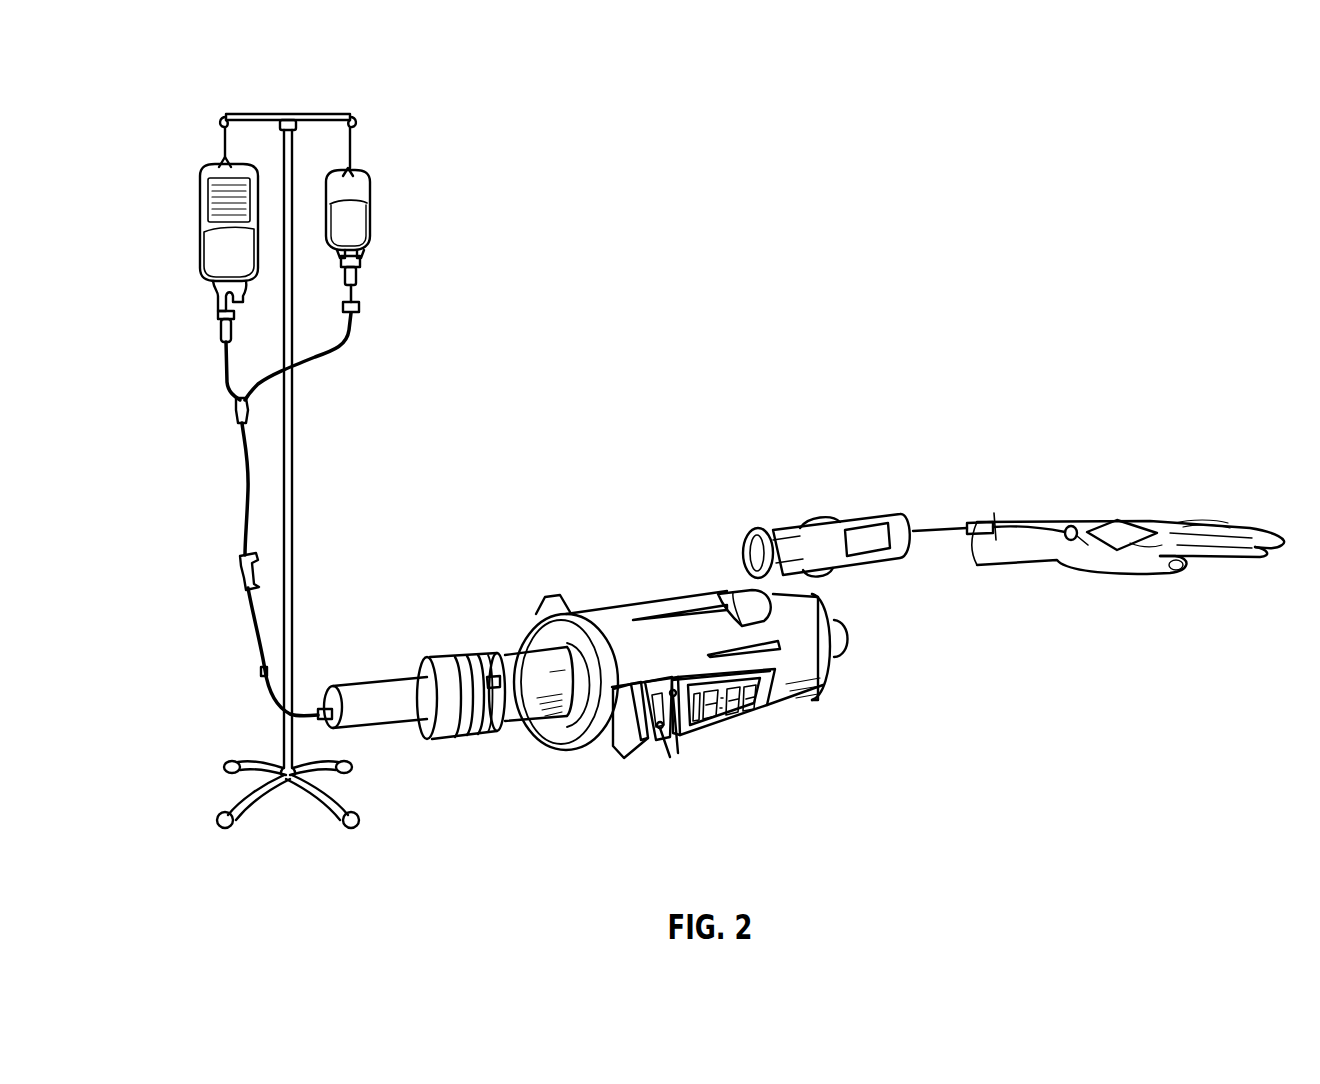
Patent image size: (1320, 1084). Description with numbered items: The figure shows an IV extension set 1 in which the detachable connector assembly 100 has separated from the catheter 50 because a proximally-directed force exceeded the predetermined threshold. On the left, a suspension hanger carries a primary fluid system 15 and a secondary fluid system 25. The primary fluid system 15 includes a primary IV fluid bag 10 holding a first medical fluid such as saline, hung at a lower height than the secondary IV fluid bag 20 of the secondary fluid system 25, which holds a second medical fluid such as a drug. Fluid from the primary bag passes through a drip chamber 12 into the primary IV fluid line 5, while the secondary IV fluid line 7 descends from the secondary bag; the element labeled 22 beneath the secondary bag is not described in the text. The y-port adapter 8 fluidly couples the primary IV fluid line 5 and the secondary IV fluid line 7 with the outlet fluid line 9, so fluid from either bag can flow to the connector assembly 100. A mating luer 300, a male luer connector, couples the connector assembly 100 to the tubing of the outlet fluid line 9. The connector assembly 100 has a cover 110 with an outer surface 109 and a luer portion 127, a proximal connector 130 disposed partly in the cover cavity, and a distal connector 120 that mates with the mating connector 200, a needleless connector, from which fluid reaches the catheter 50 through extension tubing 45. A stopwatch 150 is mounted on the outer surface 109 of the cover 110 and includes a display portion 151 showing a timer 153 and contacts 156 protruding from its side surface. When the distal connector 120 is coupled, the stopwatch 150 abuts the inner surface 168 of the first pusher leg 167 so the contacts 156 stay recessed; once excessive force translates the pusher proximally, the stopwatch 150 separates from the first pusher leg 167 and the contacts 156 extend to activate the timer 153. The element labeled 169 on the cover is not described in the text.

The IV extension set 1 is at (190, 90).
The primary IV fluid line 5 is at (226, 384).
The secondary IV fluid line 7 is at (346, 336).
The y-port adapter 8 is at (252, 416).
The outlet fluid line 9 is at (258, 488).
The primary IV fluid bag 10 is at (207, 247).
The drip chamber 12 is at (220, 330).
The primary fluid system 15 is at (188, 268).
The secondary IV fluid bag 20 is at (375, 211).
The second drip chamber 22 is at (362, 275).
The secondary fluid system 25 is at (443, 214).
The extension tubing 45 is at (932, 540).
The catheter 50 is at (1118, 518).
The connector assembly 100 is at (679, 556).
The outer surface 109 is at (708, 592).
The cover 110 is at (637, 590).
The distal connector 120 is at (840, 688).
The luer portion 127 is at (852, 642).
The proximal connector 130 is at (518, 738).
The stopwatch 150 is at (720, 748).
The display portion 151 is at (748, 732).
The timer 153 is at (760, 708).
The contact 156 is at (668, 744).
The first pusher leg 167 is at (628, 758).
The inner surface 168 is at (636, 768).
The tab 169 is at (548, 592).
The mating connector 200 is at (873, 500).
The mating luer 300 is at (465, 748).